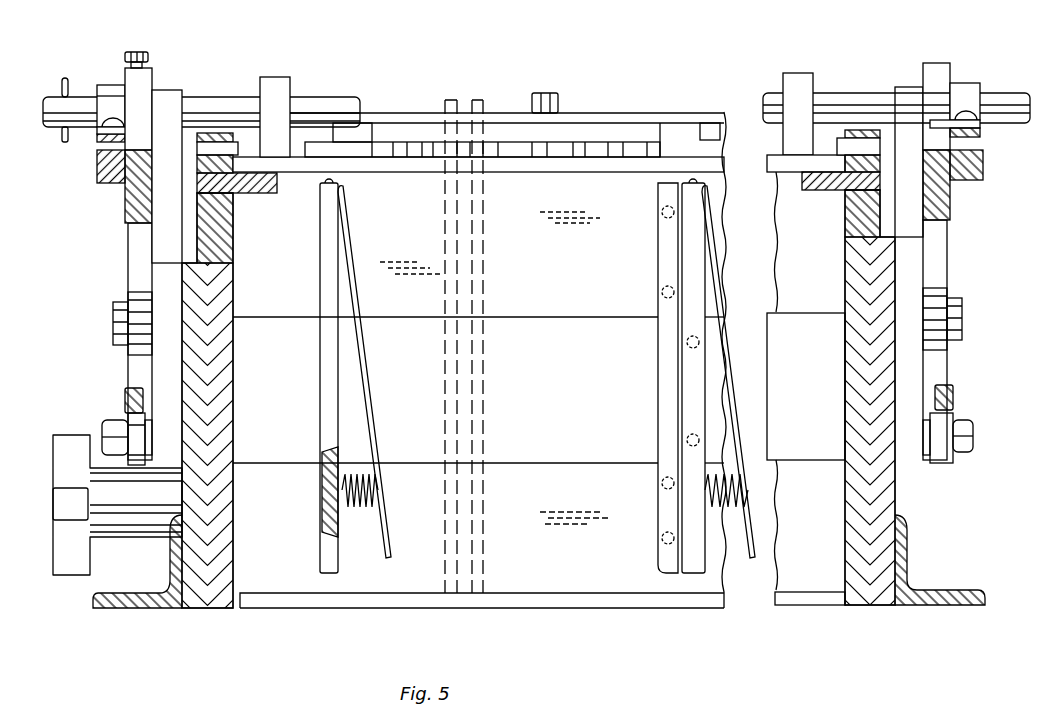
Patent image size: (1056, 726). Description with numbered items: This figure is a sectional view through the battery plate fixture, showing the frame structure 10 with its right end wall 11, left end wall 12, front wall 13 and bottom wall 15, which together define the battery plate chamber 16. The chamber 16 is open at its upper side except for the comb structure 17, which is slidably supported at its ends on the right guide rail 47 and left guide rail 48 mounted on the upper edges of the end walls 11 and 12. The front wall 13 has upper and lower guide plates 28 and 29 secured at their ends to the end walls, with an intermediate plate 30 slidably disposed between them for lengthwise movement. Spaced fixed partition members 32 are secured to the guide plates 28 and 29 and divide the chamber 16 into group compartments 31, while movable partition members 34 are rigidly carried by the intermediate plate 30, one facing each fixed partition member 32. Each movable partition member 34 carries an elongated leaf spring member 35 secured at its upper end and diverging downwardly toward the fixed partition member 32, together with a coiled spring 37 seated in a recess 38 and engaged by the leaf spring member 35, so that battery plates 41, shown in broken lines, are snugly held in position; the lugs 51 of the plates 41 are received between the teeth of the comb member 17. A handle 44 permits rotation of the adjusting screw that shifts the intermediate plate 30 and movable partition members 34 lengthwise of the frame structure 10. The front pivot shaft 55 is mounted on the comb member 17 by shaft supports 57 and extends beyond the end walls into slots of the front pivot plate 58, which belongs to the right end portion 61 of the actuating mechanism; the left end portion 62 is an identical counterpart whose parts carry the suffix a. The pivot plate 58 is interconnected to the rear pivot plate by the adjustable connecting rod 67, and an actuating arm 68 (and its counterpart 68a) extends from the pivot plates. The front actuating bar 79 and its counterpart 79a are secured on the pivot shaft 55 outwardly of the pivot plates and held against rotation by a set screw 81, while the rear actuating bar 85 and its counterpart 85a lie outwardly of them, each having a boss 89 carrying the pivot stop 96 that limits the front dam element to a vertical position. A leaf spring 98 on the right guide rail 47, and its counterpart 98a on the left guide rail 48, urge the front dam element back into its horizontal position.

The frame structure 10 is at (605, 106).
The right end wall 11 is at (228, 398).
The left end wall 12 is at (855, 290).
The front wall 13 is at (522, 288).
The bottom wall 15 is at (666, 599).
The battery plate chamber 16 is at (553, 192).
The comb structure 17 is at (391, 172).
The upper guide plate 28 is at (487, 185).
The lower guide plate 29 is at (512, 587).
The intermediate plate 30 is at (575, 445).
The group compartment 31 is at (545, 367).
The fixed partition member 32 is at (670, 382).
The movable partition member 34 is at (325, 415).
The leaf spring member 35 is at (385, 432).
The coiled spring 37 is at (347, 508).
The recess 38 is at (333, 497).
The battery plates 41 is at (452, 293).
The handle 44 is at (65, 450).
The right guide rail 47 is at (265, 191).
The left guide rail 48 is at (822, 186).
The lugs 51 is at (451, 100).
The front pivot shaft 55 is at (190, 103).
The shaft support 57 is at (278, 82).
The front pivot plate 58 is at (168, 233).
The right end portion 61 is at (120, 218).
The left end portion 62 is at (950, 222).
The adjustable connecting rod 67 is at (125, 400).
The actuating arm 68 is at (128, 348).
The actuating arm 68a is at (948, 346).
The front actuating bar 79 is at (132, 210).
The front actuating bar 79a is at (950, 210).
The set screw 81 is at (148, 56).
The rear actuating bar 85 is at (97, 174).
The rear actuating bar 85a is at (983, 170).
The boss 89 is at (100, 137).
The pivot stop 96 is at (127, 128).
The leaf spring 98 is at (215, 146).
The leaf spring 98a is at (858, 134).